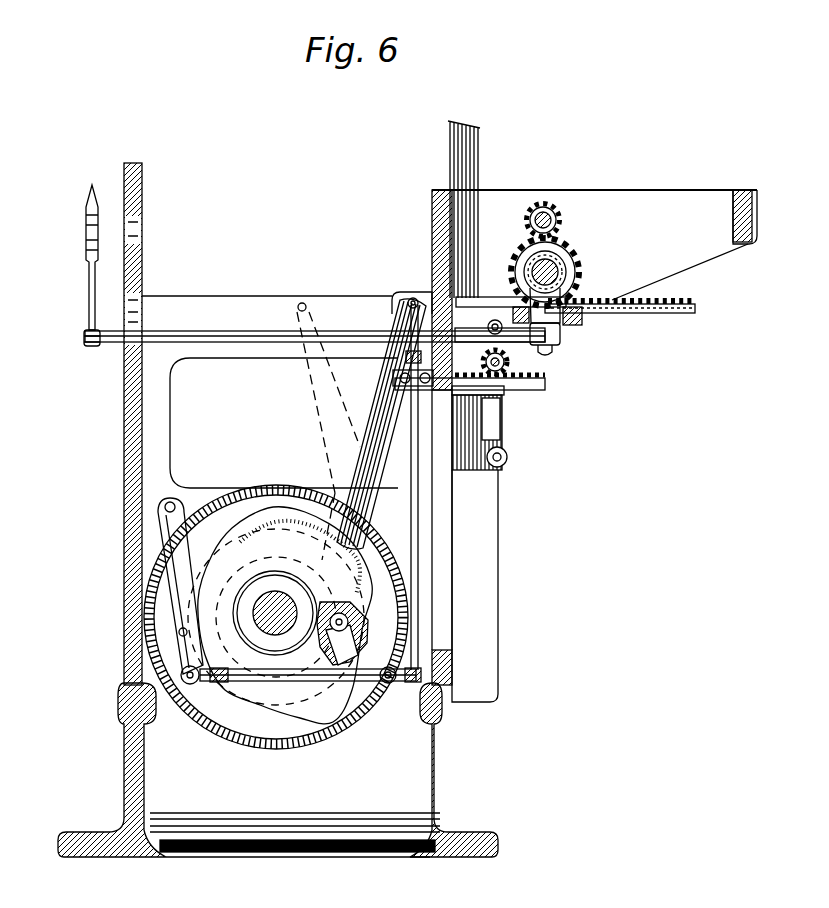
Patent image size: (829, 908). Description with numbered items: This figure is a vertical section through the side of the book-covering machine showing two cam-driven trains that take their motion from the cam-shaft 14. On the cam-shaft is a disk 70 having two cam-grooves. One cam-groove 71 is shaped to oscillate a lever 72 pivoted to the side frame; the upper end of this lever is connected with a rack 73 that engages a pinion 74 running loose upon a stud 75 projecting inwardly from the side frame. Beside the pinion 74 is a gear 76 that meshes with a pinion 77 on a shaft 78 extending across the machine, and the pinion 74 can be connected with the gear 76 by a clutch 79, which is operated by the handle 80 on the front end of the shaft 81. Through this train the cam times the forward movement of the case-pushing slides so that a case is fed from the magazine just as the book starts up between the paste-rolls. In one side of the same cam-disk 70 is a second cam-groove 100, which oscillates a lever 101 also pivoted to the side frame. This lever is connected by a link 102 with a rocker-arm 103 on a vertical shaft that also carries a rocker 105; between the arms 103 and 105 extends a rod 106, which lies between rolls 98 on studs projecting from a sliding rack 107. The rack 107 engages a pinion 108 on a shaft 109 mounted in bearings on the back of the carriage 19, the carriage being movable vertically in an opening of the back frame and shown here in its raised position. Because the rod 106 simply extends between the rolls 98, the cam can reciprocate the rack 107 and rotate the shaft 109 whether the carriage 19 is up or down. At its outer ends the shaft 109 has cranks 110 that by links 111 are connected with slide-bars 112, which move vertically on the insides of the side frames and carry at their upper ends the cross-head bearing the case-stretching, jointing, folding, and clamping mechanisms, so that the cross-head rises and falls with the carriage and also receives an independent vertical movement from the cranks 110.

The cam-shaft 14 is at (190, 627).
The carriage 19 is at (408, 302).
The cam-disk 70 is at (248, 750).
The cam-groove 71 is at (360, 632).
The lever 72 is at (380, 438).
The rack 73 is at (680, 312).
The pinion 74 is at (568, 254).
The stud 75 is at (526, 252).
The gear 76 is at (582, 274).
The pinion 77 is at (562, 214).
The shaft 78 is at (545, 210).
The clutch 79 is at (578, 325).
The handle 80 is at (85, 290).
The shaft 81 is at (226, 338).
The rolls 98 is at (398, 378).
The cam-groove 100 is at (322, 720).
The lever 101 is at (165, 562).
The link 102 is at (362, 710).
The rocker-arm 103 is at (422, 676).
The rocker 105 is at (404, 356).
The rod 106 is at (420, 574).
The sliding rack 107 is at (504, 398).
The pinion 108 is at (512, 362).
The shaft 109 is at (550, 384).
The cranks 110 is at (495, 320).
The links 111 is at (500, 440).
The slide-bars 112 is at (448, 160).